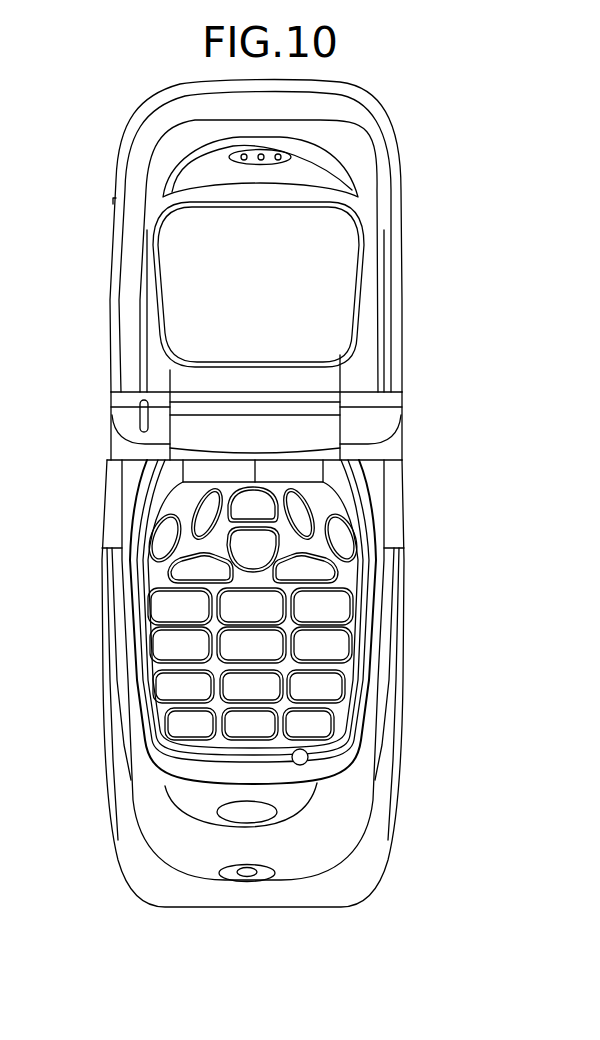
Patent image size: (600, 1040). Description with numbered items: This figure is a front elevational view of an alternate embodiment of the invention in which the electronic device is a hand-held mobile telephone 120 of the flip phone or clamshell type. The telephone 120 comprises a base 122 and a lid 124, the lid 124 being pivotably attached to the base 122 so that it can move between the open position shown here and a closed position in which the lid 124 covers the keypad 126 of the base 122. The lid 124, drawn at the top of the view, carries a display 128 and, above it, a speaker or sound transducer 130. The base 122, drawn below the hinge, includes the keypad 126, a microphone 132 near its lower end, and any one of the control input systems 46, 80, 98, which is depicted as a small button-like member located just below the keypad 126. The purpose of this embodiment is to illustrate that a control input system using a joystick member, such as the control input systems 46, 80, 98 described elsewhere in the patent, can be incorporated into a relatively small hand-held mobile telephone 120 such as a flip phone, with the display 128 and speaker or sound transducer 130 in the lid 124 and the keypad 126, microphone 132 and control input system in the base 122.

The hand-held mobile telephone 120 is at (93, 298).
The base 122 is at (162, 902).
The lid 124 is at (118, 230).
The keypad 126 is at (172, 645).
The display 128 is at (347, 266).
The speaker or sound transducer 130 is at (297, 162).
The microphone 132 is at (245, 882).
The control input system 46 is at (351, 853).
The control input system 80 is at (351, 853).
The control input system 98 is at (306, 765).